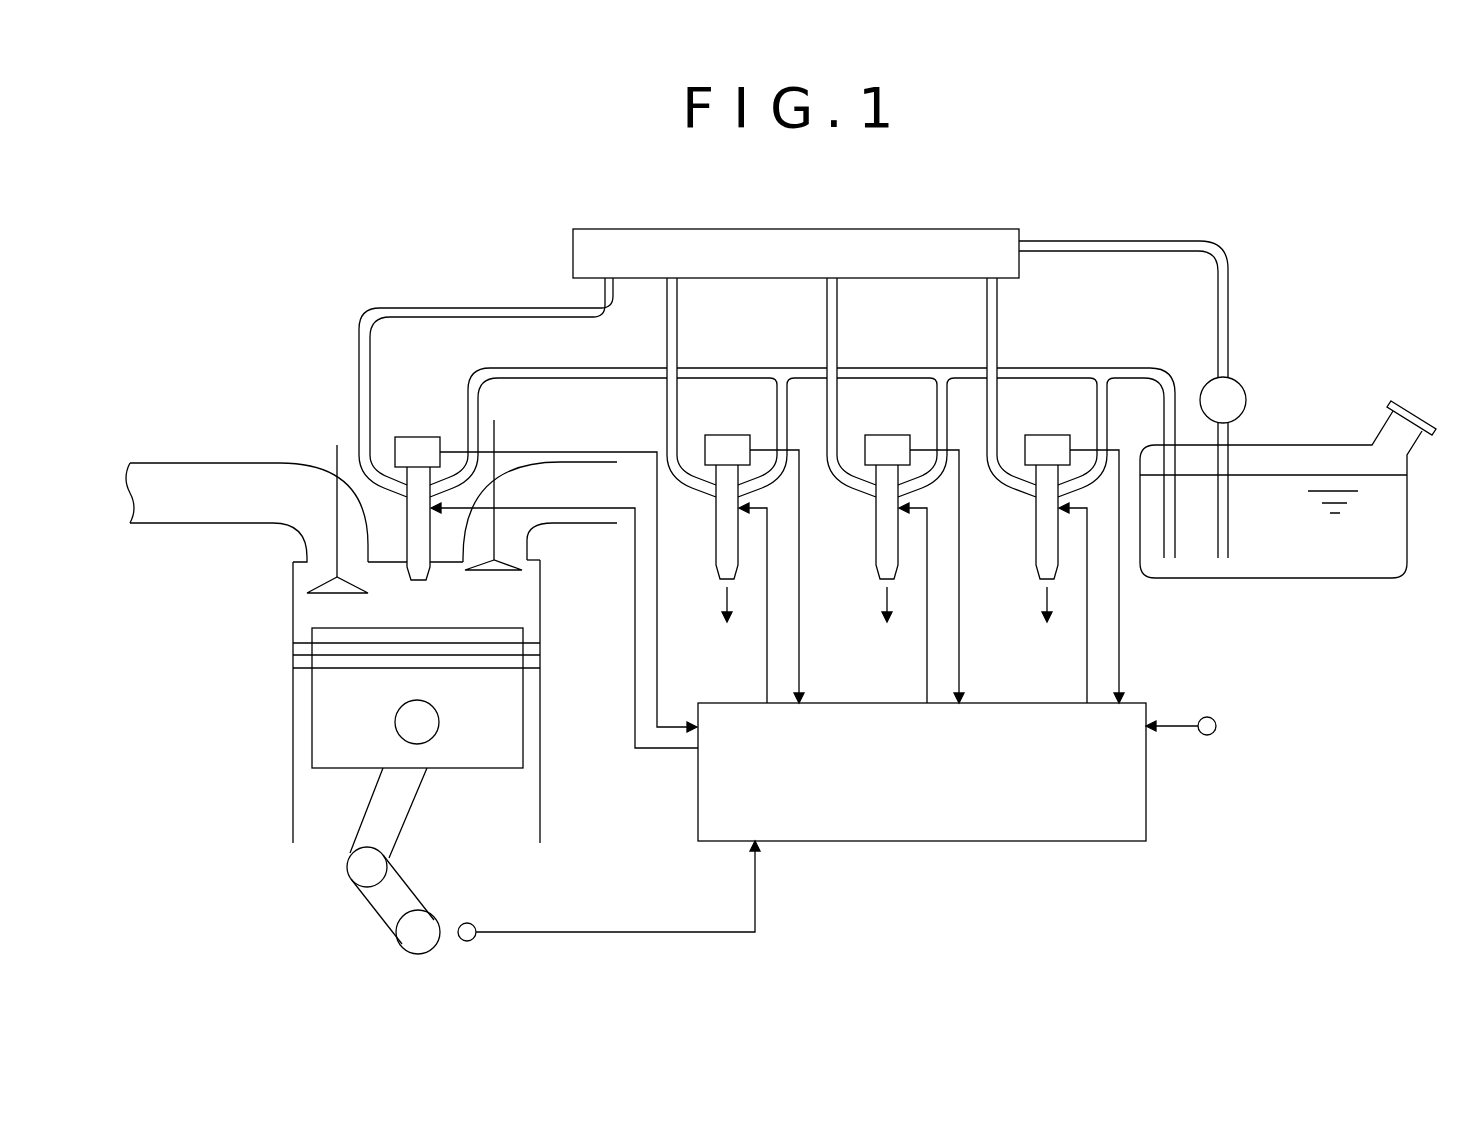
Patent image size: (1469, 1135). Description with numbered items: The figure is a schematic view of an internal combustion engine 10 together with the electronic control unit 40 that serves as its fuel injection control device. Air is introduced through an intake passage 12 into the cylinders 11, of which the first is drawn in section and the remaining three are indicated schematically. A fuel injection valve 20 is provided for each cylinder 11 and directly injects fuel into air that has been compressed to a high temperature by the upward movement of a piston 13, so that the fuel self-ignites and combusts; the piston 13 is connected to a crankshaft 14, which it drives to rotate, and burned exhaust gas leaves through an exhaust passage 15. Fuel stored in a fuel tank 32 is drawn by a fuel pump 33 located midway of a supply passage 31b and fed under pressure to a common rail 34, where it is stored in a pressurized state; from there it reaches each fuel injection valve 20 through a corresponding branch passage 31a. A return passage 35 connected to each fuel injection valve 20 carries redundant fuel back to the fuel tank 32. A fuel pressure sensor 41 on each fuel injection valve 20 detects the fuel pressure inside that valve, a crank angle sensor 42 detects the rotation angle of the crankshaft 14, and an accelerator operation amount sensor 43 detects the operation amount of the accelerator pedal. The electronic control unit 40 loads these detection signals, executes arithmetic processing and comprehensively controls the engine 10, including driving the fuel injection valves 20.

The internal combustion engine 10 is at (584, 794).
The cylinder 11 is at (541, 601).
The intake passage 12 is at (205, 463).
The piston 13 is at (497, 768).
The crankshaft 14 is at (399, 936).
The exhaust passage 15 is at (583, 462).
The fuel injection valve 20 is at (432, 572).
The branch passage 31a is at (465, 308).
The supply passage 31b is at (1143, 239).
The fuel tank 32 is at (1408, 500).
The fuel pump 33 is at (1247, 400).
The common rail 34 is at (795, 228).
The return passage 35 is at (620, 368).
The electronic control unit 40 is at (1147, 812).
The fuel pressure sensor 41 is at (418, 437).
The crank angle sensor 42 is at (467, 923).
The accelerator operation amount sensor 43 is at (1217, 727).